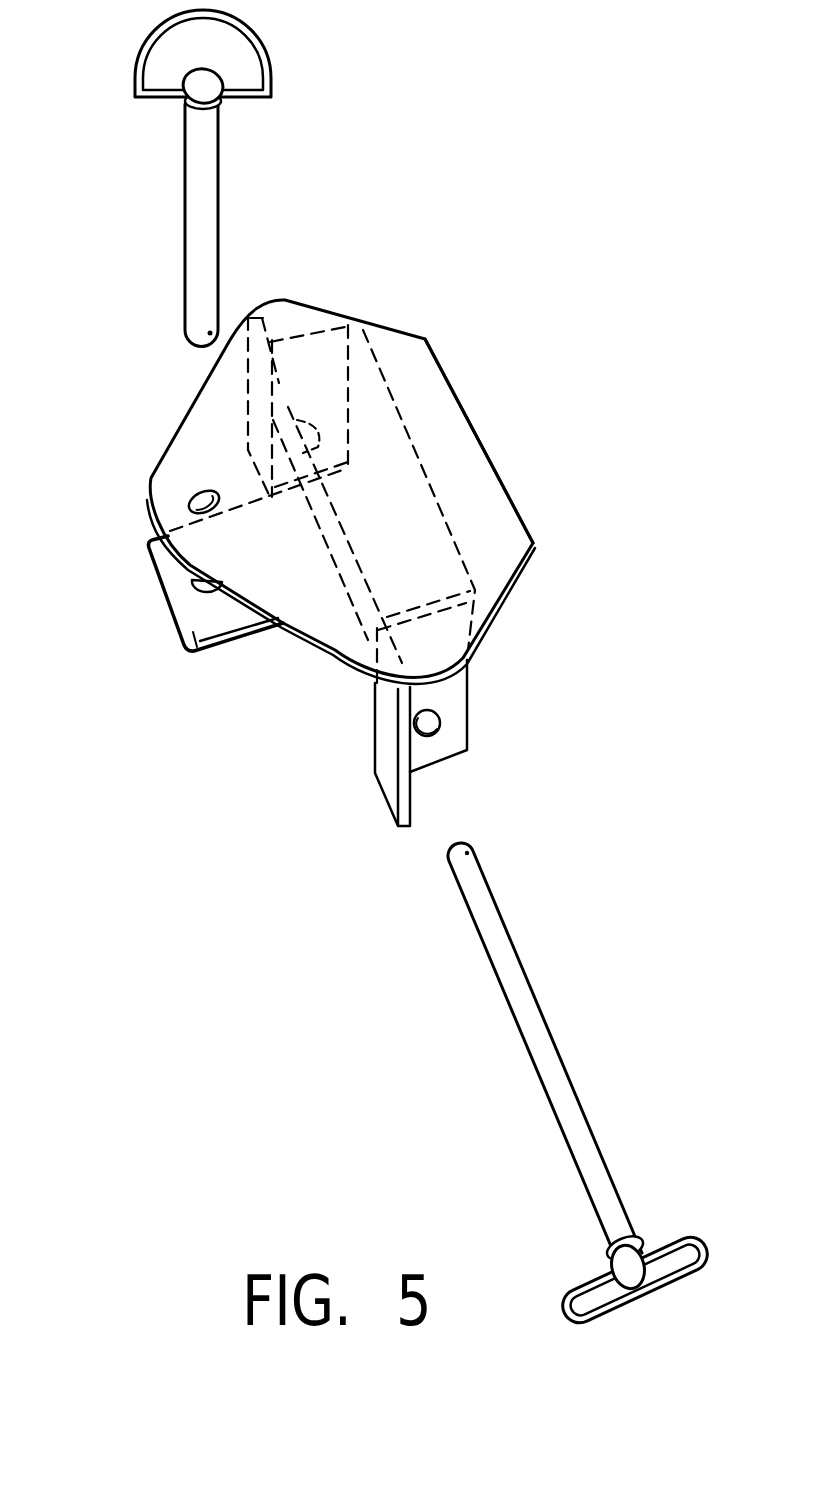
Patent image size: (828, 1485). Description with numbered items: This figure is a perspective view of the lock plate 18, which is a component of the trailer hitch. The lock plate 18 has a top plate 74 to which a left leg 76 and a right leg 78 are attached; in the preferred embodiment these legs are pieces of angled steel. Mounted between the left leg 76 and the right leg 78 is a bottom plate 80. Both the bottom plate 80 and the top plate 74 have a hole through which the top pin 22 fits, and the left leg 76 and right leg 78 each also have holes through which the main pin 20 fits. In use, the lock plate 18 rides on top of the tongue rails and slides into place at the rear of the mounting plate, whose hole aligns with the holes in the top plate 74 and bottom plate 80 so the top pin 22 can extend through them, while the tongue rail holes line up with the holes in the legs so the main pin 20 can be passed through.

The lock plate 18 is at (470, 417).
The main pin 20 is at (594, 1172).
The top pin 22 is at (197, 218).
The top plate 74 is at (514, 520).
The left leg 76 is at (453, 718).
The right leg 78 is at (257, 418).
The bottom plate 80 is at (183, 648).